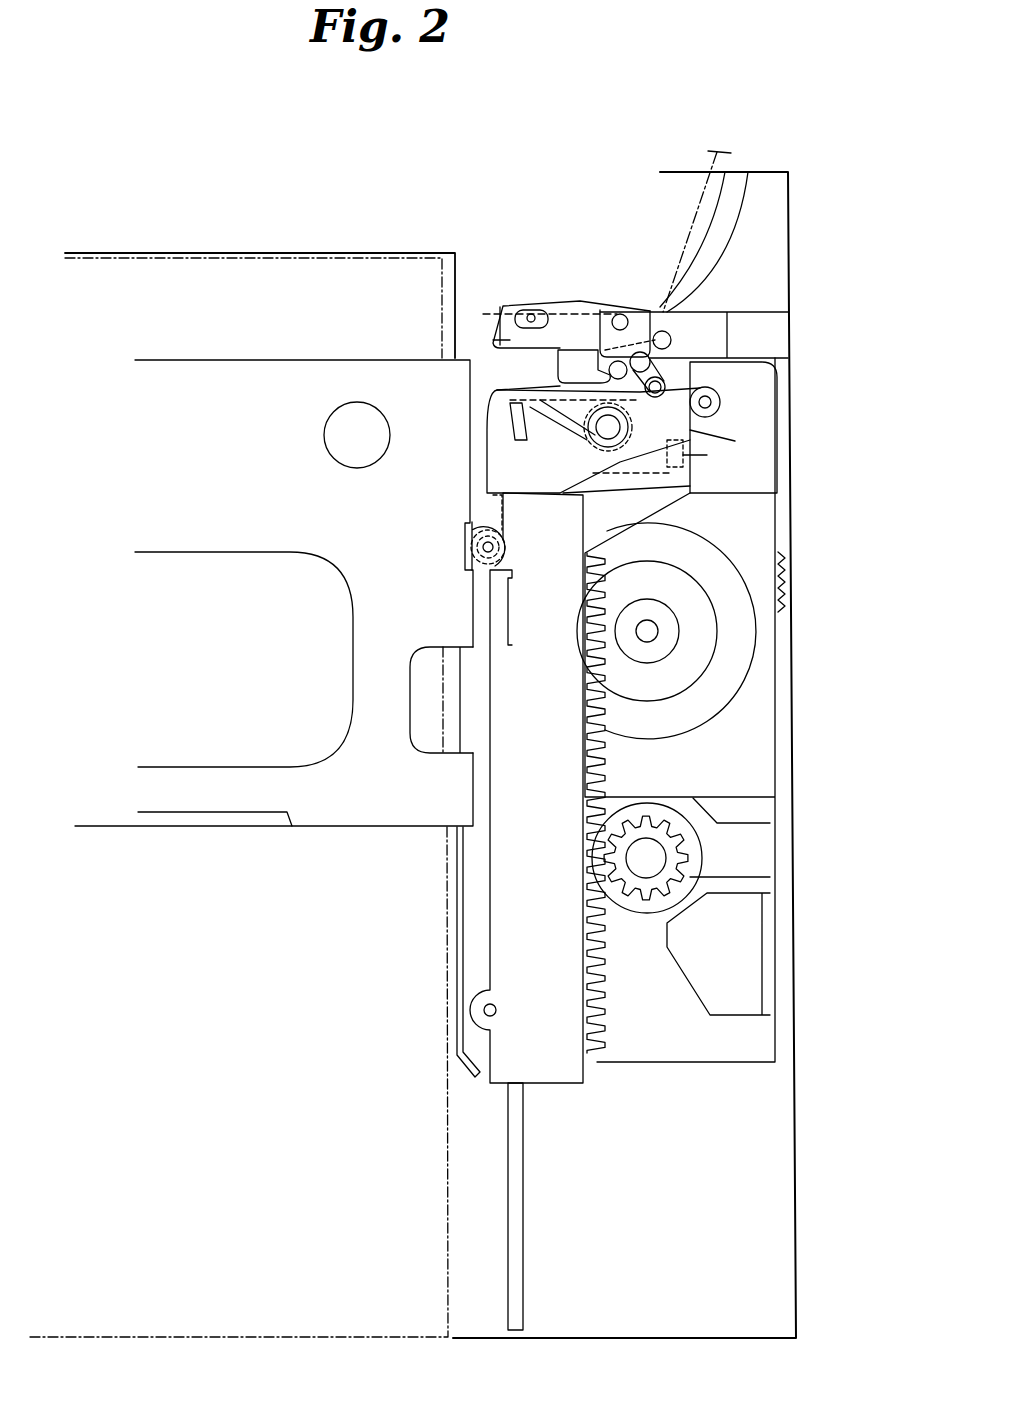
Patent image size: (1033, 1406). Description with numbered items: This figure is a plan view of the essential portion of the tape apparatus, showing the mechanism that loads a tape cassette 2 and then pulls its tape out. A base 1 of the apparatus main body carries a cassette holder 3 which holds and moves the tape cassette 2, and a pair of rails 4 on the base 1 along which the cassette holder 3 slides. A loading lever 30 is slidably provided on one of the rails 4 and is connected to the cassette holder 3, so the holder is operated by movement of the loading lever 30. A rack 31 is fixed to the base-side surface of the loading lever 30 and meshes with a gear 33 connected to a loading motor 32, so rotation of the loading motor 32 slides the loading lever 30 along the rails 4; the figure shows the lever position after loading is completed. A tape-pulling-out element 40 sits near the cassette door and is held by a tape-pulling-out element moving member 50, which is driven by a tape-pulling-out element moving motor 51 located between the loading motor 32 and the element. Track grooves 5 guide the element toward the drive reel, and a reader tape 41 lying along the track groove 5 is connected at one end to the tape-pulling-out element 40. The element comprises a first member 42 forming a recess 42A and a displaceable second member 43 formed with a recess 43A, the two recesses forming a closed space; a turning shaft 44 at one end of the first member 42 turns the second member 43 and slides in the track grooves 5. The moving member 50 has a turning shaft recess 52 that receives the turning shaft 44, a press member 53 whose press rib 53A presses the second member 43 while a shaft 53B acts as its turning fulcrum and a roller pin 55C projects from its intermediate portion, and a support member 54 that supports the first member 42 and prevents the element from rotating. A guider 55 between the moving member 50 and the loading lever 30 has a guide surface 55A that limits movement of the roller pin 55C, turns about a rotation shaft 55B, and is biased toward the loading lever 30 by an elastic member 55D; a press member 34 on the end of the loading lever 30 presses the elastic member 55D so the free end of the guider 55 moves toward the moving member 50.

The base 1 is at (765, 1302).
The tape cassette 2 is at (285, 293).
The cassette holder 3 is at (168, 457).
The rails 4 is at (517, 1267).
The track groove 5 is at (728, 215).
The loading lever 30 is at (553, 1082).
The rack 31 is at (607, 1017).
The loading motor 32 is at (697, 835).
The gear 33 is at (690, 880).
The press member 34 is at (505, 540).
The tape-pulling-out element 40 is at (547, 300).
The reader tape 41 is at (693, 160).
The first member 42 is at (558, 307).
The recess 42A is at (532, 313).
The second member 43 is at (503, 307).
The recess 43A is at (515, 300).
The turning shaft 44 is at (620, 317).
The tape-pulling-out element moving member 50 is at (720, 324).
The tape-pulling-out element moving motor 51 is at (723, 665).
The turning shaft recess 52 is at (613, 320).
The press member 53 is at (678, 378).
The press rib 53A is at (657, 333).
The shaft 53B is at (662, 384).
The support member 54 is at (560, 355).
The guider 55 is at (550, 415).
The guide surface 55A is at (573, 370).
The rotation shaft 55B is at (722, 402).
The portion 55C is at (735, 441).
The elastic member 55D is at (695, 453).